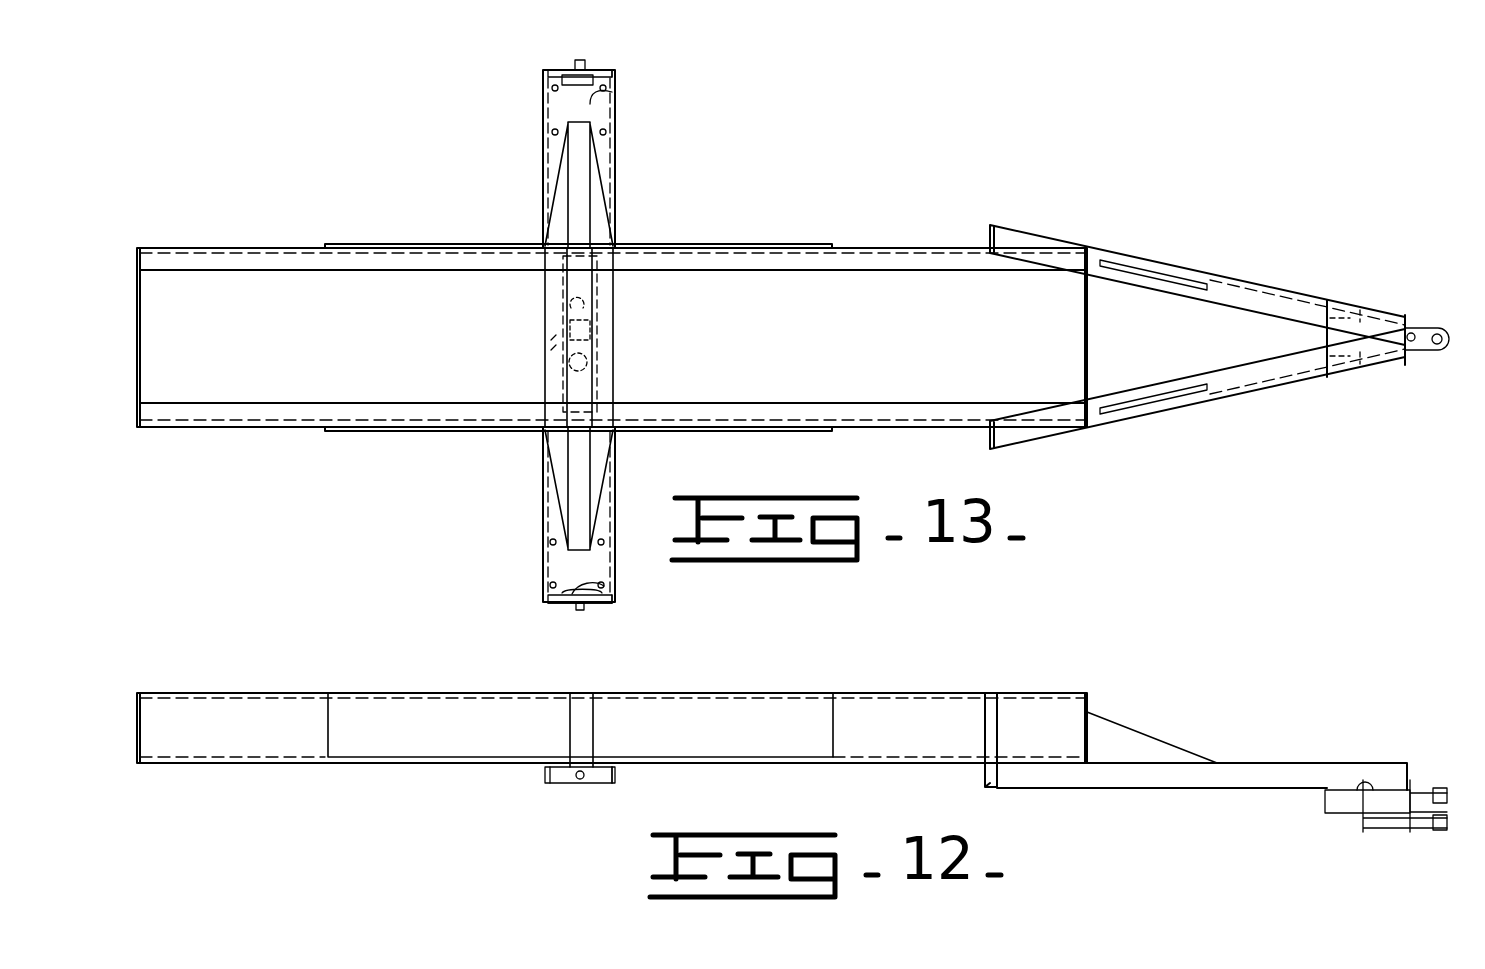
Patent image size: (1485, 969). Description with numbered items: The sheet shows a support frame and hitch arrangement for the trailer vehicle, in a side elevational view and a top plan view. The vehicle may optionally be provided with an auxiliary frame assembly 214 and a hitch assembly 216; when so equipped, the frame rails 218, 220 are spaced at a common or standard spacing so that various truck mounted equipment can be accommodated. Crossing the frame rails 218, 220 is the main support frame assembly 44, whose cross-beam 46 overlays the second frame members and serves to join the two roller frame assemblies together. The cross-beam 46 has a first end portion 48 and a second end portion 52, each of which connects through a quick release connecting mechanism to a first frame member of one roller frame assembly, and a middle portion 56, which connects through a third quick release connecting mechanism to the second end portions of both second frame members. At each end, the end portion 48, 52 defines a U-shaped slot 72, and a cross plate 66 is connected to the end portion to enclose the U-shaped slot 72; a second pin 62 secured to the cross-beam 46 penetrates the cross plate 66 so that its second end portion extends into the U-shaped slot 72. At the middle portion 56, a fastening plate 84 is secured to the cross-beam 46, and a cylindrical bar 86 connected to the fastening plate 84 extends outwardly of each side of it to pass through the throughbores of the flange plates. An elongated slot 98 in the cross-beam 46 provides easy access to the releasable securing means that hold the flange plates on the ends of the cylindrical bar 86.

In FIG. 13, the main support frame assembly 44 is at (532, 471).
In FIG. 13, the cross-beam 46 is at (548, 556).
In FIG. 12, the cross-beam 46 is at (545, 778).
In FIG. 13, the first end portion 48 is at (532, 597).
In FIG. 13, the second end portion 52 is at (533, 94).
In FIG. 13, the middle portion 56 is at (528, 312).
In FIG. 13, the second pin 62 is at (577, 62).
In FIG. 12, the second pin 62 is at (578, 780).
In FIG. 13, the cross plate 66 is at (607, 70).
In FIG. 12, the cross plate 66 is at (600, 785).
In FIG. 13, the U-shaped slot 72 is at (612, 95).
In FIG. 13, the fastening plate 84 is at (548, 358).
In FIG. 13, the cylindrical bar 86 is at (600, 358).
In FIG. 13, the elongated slot 98 is at (590, 315).
In FIG. 13, the auxiliary frame assembly 214 is at (907, 243).
In FIG. 12, the auxiliary frame assembly 214 is at (887, 690).
In FIG. 13, the hitch assembly 216 is at (1285, 400).
In FIG. 12, the hitch assembly 216 is at (1250, 800).
In FIG. 13, the frame rail 218 is at (843, 265).
In FIG. 13, the frame rail 220 is at (905, 400).
In FIG. 12, the frame rail 220 is at (283, 750).